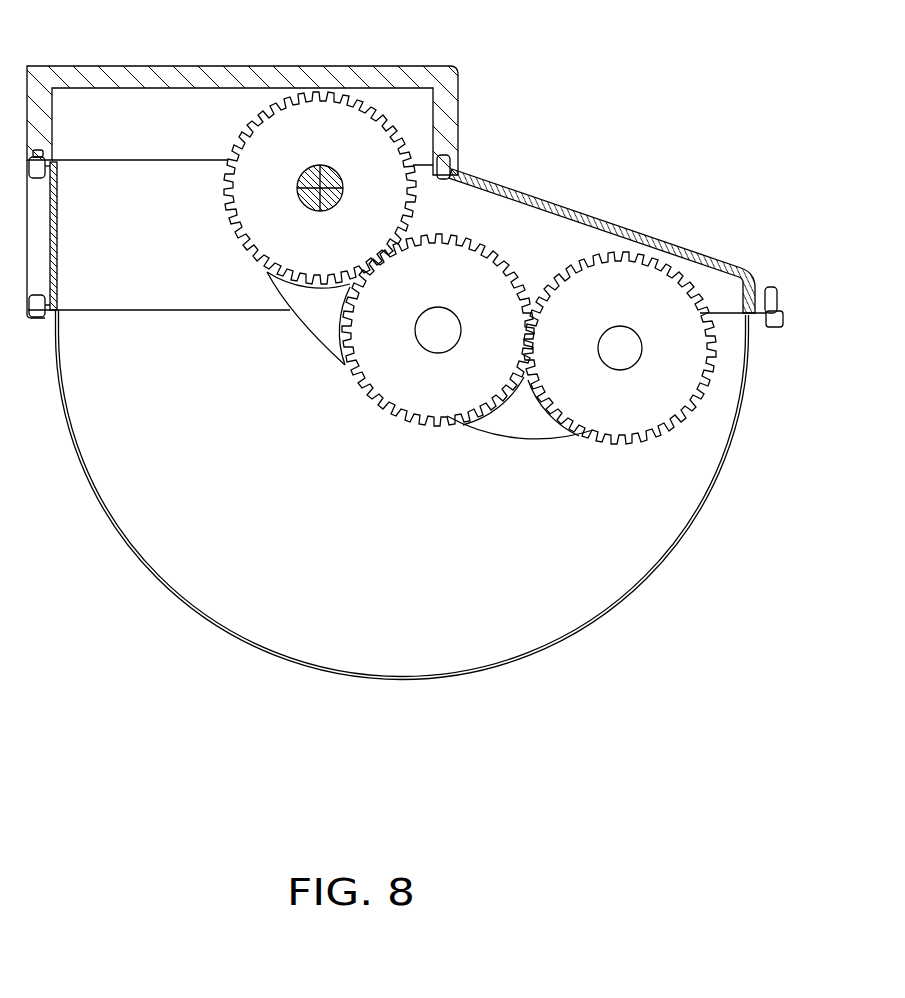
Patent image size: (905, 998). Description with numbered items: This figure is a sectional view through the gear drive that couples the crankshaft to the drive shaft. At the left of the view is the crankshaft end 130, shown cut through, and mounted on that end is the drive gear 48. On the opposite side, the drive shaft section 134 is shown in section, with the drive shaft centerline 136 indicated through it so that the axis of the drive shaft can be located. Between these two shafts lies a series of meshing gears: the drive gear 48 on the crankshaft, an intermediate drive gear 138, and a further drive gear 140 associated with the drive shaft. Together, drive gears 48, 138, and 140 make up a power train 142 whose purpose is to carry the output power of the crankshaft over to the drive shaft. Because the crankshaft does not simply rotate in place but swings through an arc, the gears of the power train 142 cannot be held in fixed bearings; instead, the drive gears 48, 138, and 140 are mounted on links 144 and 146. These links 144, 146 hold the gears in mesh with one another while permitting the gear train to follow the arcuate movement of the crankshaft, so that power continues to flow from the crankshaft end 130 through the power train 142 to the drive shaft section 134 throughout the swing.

The drive gear 48 is at (591, 397).
The crankshaft end 130 is at (622, 348).
The drive shaft section 134 is at (327, 168).
The drive shaft centerline 136 is at (342, 188).
The drive gear 138 is at (427, 398).
The drive gear 140 is at (246, 213).
The power train 142 is at (490, 227).
The link 144 is at (527, 420).
The link 146 is at (315, 322).